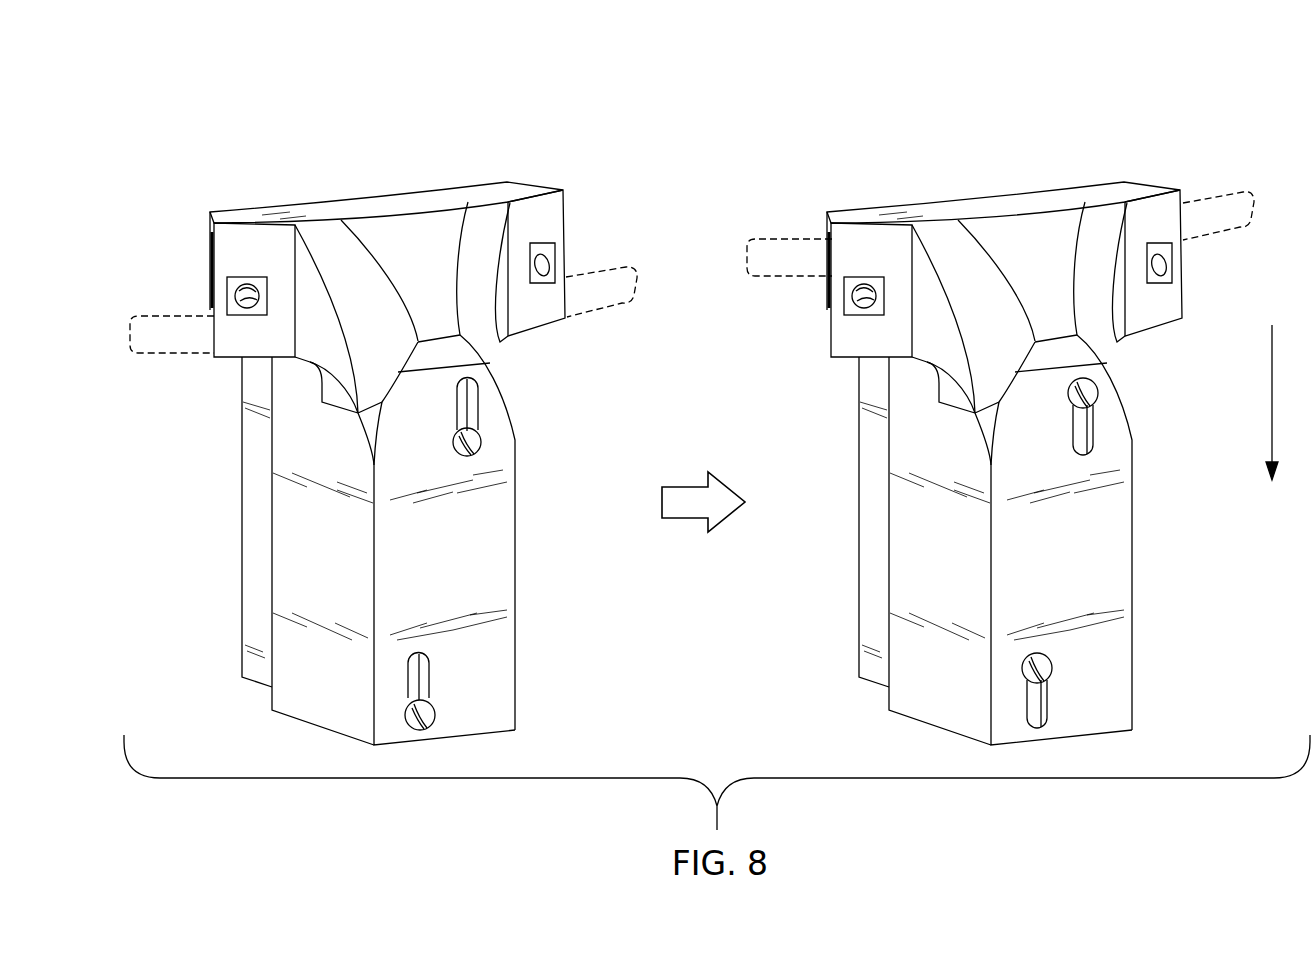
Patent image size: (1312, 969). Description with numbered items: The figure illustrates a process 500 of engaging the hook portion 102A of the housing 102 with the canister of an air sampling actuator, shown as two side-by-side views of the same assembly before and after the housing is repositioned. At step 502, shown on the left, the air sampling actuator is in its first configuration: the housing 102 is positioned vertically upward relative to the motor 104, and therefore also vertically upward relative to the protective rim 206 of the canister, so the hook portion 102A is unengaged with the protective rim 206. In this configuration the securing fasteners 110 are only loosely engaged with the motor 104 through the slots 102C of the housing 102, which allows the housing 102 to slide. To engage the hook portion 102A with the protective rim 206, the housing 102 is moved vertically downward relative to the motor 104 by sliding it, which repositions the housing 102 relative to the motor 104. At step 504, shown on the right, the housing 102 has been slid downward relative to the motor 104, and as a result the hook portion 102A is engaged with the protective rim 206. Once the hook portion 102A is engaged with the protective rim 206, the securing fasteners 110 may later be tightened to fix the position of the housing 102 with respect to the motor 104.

The housing 102 is at (527, 538).
The hook portion 102A is at (523, 192).
The slots 102C is at (462, 398).
The motor 104 is at (250, 528).
The securing fasteners 110 is at (482, 442).
The protective rim 206 is at (158, 313).
The process 500 is at (1082, 92).
The step 502 is at (349, 188).
The step 504 is at (964, 188).